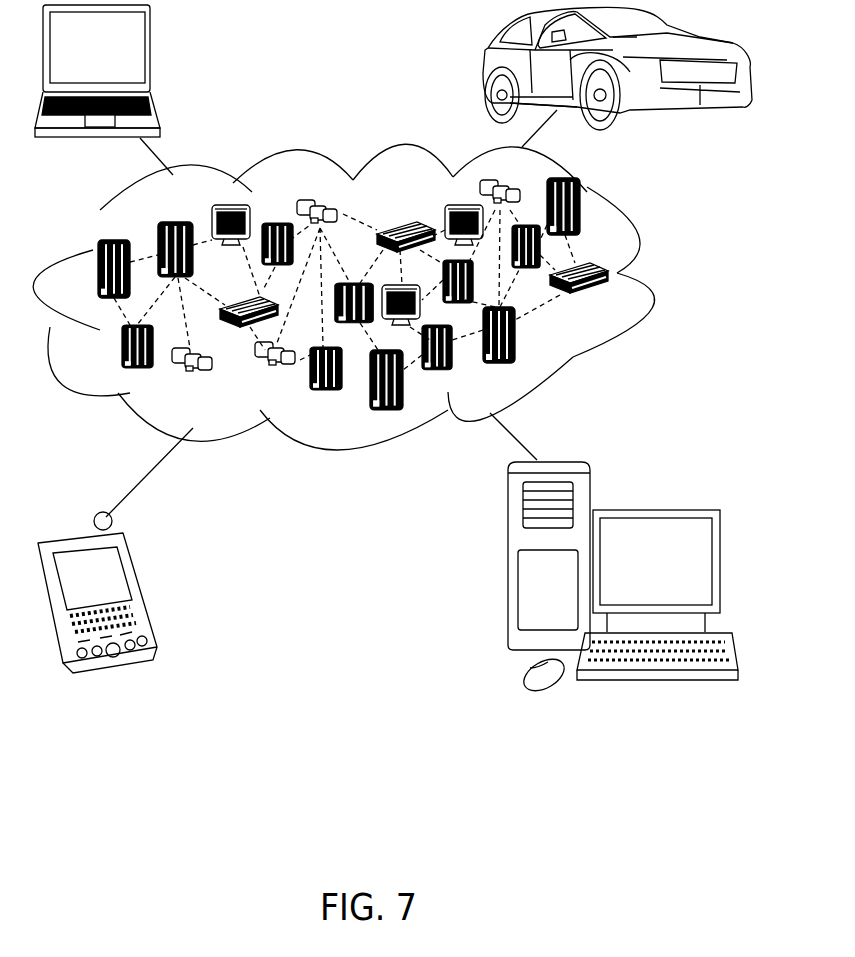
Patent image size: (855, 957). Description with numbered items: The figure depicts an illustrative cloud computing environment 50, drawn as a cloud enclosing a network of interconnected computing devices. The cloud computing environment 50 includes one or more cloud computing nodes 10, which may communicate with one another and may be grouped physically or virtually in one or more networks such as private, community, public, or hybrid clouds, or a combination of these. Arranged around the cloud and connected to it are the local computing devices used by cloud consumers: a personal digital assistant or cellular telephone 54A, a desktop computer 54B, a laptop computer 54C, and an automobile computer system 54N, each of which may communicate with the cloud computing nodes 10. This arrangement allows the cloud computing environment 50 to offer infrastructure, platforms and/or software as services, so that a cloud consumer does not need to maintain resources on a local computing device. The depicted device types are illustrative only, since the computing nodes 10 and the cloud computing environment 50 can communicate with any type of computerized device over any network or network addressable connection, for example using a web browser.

The cloud computing node 10 is at (616, 301).
The cloud computing environment 50 is at (655, 278).
The personal digital assistant or cellular telephone 54A is at (143, 587).
The desktop computer 54B is at (656, 508).
The laptop computer 54C is at (152, 52).
The automobile computer system 54N is at (490, 72).